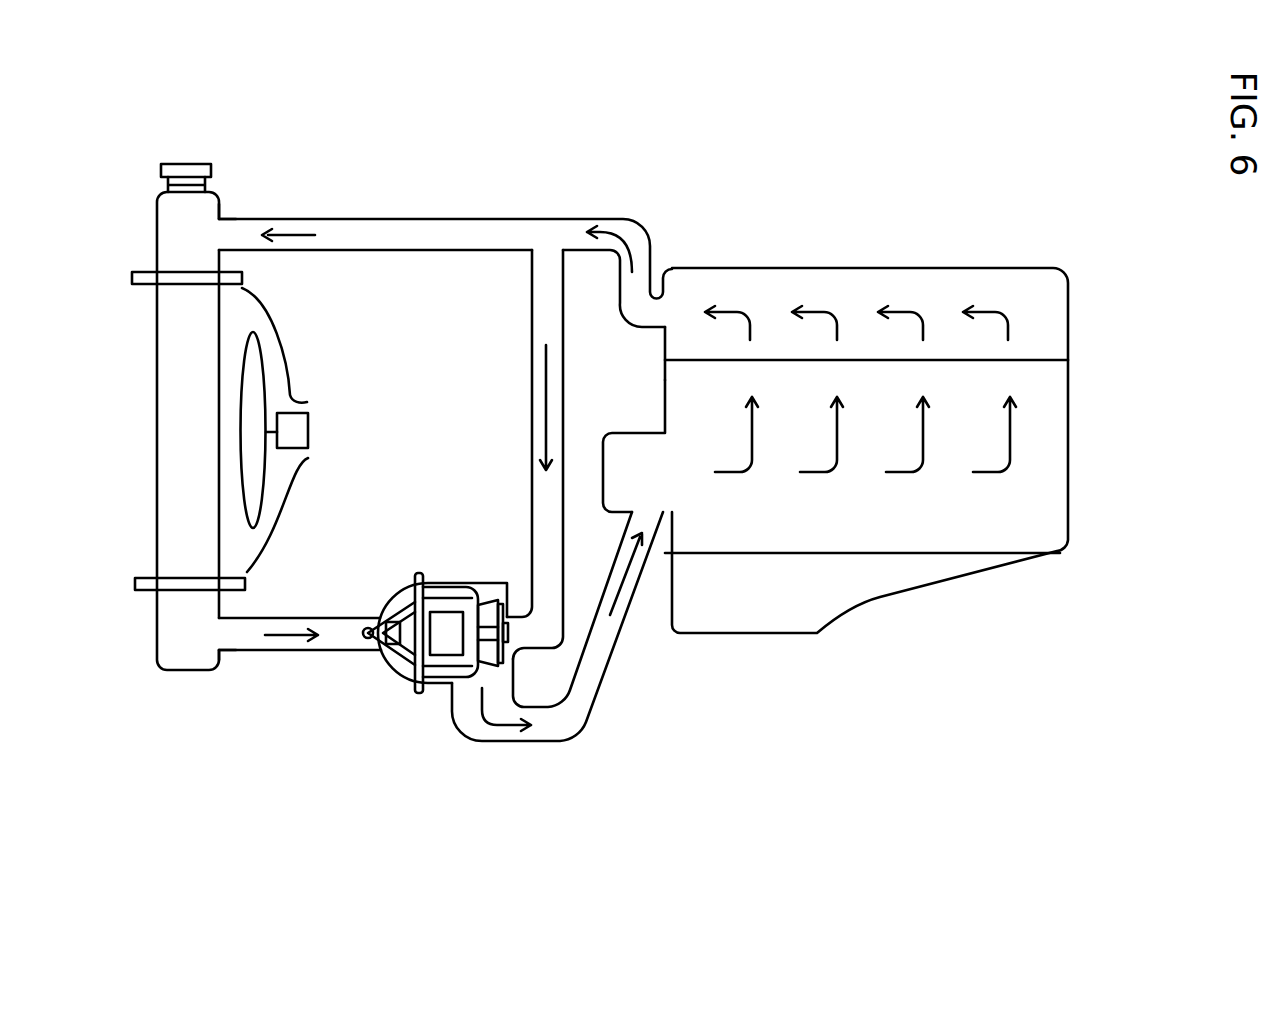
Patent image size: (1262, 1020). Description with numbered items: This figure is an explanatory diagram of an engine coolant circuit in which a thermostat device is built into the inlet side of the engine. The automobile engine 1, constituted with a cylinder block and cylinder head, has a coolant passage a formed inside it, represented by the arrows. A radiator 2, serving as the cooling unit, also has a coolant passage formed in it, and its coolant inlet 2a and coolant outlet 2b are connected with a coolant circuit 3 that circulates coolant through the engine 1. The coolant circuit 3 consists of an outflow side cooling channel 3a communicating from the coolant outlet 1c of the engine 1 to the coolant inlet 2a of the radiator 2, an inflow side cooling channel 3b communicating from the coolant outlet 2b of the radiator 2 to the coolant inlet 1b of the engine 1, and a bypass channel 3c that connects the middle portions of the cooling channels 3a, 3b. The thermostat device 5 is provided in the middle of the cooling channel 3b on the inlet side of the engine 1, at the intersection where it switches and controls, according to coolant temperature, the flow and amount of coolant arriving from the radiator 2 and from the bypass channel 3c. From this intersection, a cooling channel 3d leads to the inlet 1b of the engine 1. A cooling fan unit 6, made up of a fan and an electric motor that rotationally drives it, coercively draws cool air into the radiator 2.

The automobile engine 1 is at (820, 363).
The coolant inlet 1b is at (665, 432).
The coolant outlet 1c is at (665, 329).
The radiator 2 is at (167, 450).
The coolant inlet 2a is at (225, 218).
The coolant outlet 2b is at (227, 655).
The coolant circuit 3 is at (460, 195).
The outflow side cooling channel 3a is at (337, 218).
The inflow side cooling channel 3b is at (352, 652).
The bypass channel 3c is at (530, 482).
The cooling channel 3d is at (528, 742).
The thermostat device 5 is at (403, 597).
The cooling fan unit 6 is at (277, 392).
The coolant passage a is at (832, 315).